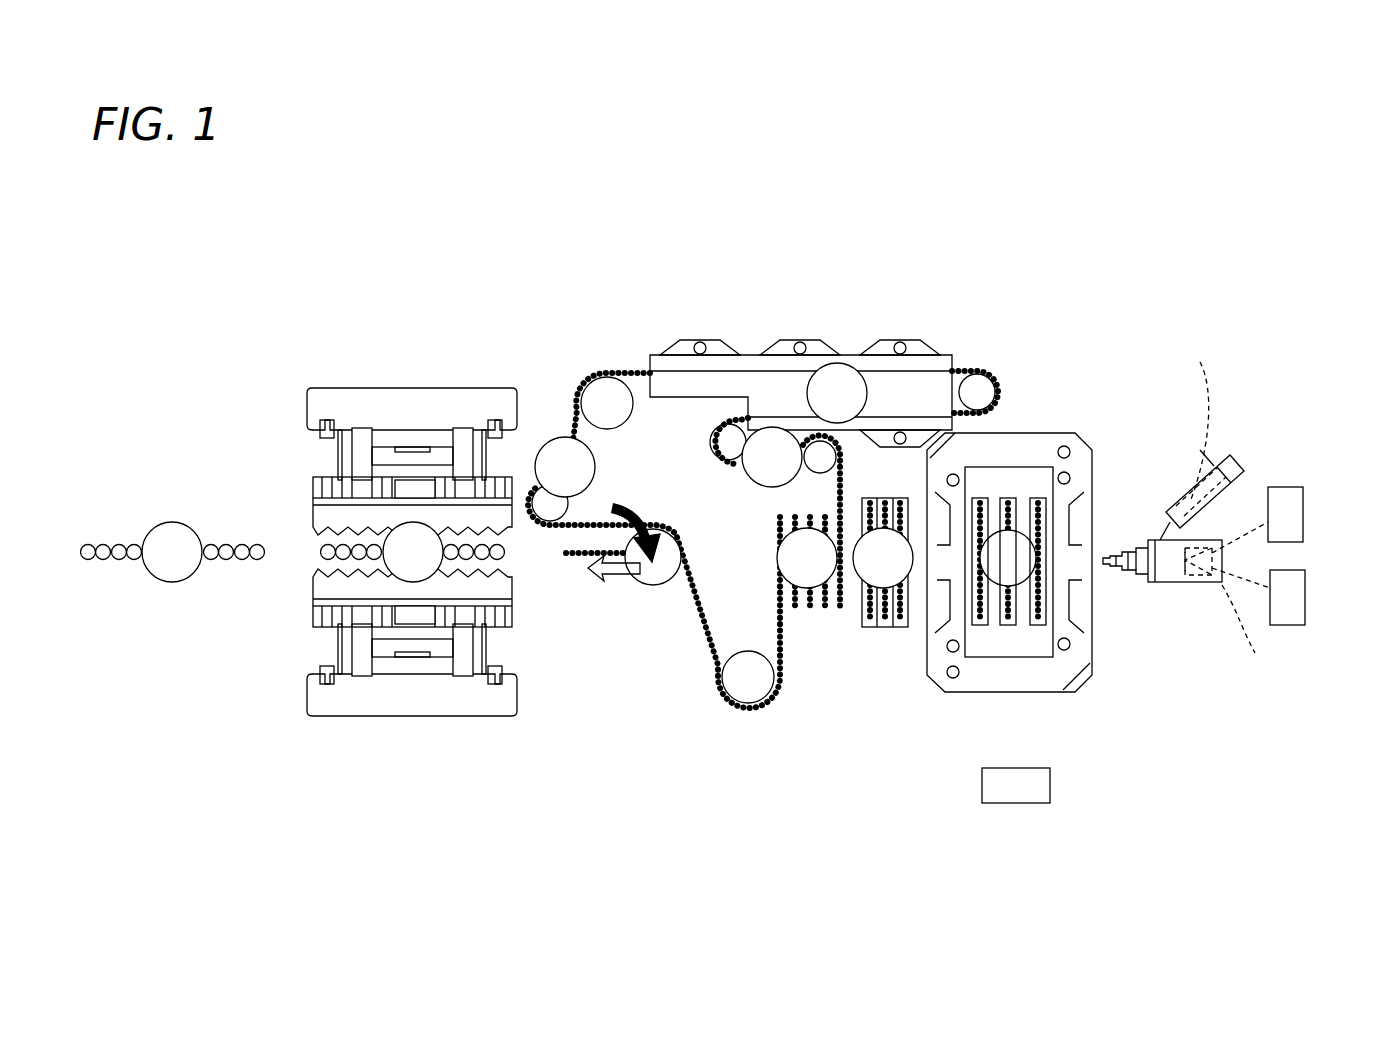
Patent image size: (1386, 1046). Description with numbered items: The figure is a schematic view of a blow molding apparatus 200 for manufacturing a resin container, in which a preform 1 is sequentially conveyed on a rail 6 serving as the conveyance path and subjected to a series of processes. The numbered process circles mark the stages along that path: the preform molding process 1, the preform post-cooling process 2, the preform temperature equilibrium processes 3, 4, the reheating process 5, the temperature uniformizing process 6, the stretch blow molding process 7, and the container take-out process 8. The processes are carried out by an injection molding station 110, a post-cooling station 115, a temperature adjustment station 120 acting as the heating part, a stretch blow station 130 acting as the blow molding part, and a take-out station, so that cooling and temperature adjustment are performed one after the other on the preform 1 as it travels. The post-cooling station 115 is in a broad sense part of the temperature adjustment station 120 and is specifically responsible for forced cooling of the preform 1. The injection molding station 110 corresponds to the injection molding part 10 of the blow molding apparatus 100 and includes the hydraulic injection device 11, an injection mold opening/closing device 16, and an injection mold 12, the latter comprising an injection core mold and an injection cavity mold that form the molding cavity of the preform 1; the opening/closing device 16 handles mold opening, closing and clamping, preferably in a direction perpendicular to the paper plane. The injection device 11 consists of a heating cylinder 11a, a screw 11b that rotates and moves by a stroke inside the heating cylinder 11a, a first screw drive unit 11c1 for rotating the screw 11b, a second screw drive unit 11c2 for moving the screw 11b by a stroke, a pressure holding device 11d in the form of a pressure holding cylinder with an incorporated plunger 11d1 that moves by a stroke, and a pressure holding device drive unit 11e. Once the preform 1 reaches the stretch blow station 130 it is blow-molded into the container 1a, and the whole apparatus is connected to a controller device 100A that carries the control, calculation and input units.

The preform 1 is at (593, 312).
The container 1a is at (230, 530).
The preform post-cooling process 2 is at (883, 558).
The preform temperature equilibrium process 3 is at (807, 558).
The preform temperature equilibrium process 4 is at (772, 457).
The reheating process 5 is at (837, 393).
The rail 6 is at (666, 676).
The stretch blow molding process 7 is at (413, 552).
The container take-out process 8 is at (172, 552).
The injection molding part 10 is at (1055, 579).
The injection device 11 is at (1227, 506).
The heating cylinder 11a is at (1163, 583).
The screw 11b is at (1230, 599).
The first screw drive unit 11c1 is at (1305, 608).
The second screw drive unit 11c2 is at (1303, 500).
The pressure holding device 11d is at (1217, 466).
The plunger 11d1 is at (1198, 419).
The pressure holding device drive unit 11e is at (1237, 473).
The injection mold 12 is at (997, 645).
The injection mold opening/closing device 16 is at (1030, 672).
The blow molding apparatus 100 is at (750, 293).
The controller device 100A is at (1050, 785).
The injection molding station 110 is at (1055, 579).
The post-cooling station 115 is at (857, 650).
The temperature adjustment station 120 is at (848, 338).
The stretch blow station 130 is at (460, 400).
The blow molding apparatus 200 is at (972, 322).